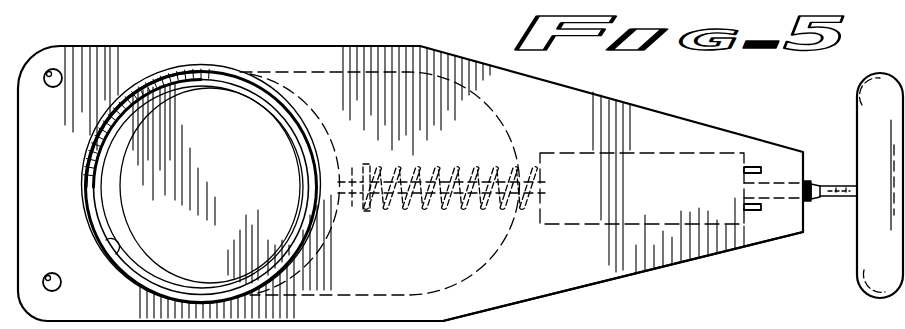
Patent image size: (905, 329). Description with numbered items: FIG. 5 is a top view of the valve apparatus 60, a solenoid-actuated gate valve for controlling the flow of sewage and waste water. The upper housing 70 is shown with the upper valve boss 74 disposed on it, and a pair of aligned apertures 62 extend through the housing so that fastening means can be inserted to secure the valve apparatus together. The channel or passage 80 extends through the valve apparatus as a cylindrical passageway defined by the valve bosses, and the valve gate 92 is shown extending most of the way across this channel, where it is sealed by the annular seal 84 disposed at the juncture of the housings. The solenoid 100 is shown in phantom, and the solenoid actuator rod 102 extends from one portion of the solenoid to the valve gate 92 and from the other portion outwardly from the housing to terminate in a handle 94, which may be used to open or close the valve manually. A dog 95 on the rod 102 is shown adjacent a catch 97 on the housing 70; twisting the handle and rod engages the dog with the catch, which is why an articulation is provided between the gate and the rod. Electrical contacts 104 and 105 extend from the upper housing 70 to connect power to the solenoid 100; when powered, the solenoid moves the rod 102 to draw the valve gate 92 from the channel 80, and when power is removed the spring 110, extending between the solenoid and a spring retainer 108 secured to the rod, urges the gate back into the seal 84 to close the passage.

The valve apparatus 60 is at (722, 108).
The aligned apertures 62 is at (50, 69).
The upper housing 70 is at (544, 290).
The upper valve boss 74 is at (82, 180).
The channel or passage 80 is at (116, 262).
The annular seal 84 is at (200, 72).
The valve gate 92 is at (195, 217).
The handle 94 is at (857, 98).
The dog 95 is at (842, 184).
The catch 97 is at (816, 204).
The solenoid 100 is at (640, 160).
The solenoid actuator rod 102 is at (441, 173).
The electrical contact 104 is at (760, 209).
The electrical contact 105 is at (766, 162).
The spring retainer 108 is at (366, 212).
The spring 110 is at (419, 216).